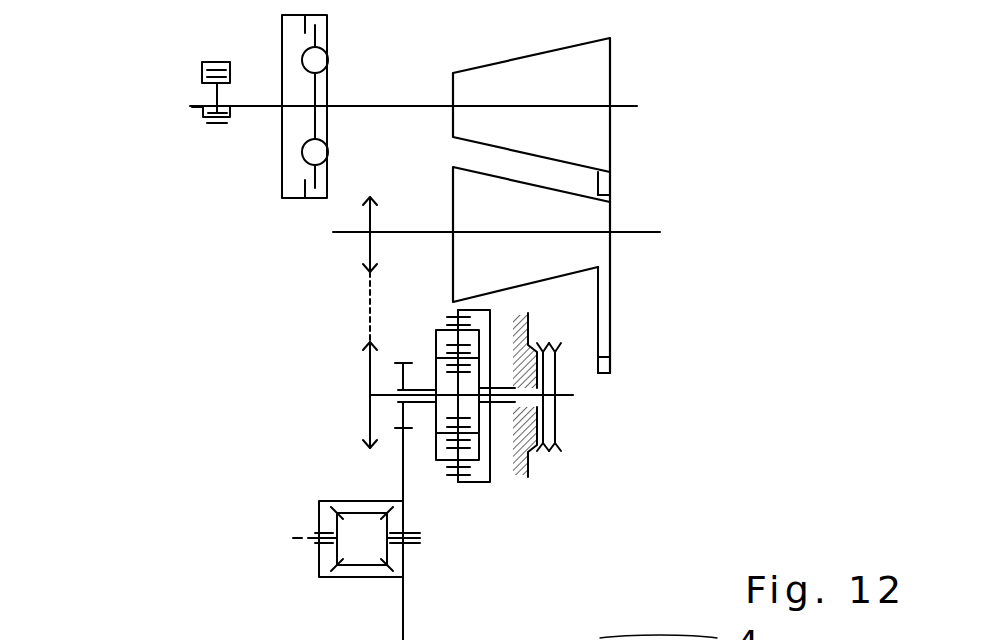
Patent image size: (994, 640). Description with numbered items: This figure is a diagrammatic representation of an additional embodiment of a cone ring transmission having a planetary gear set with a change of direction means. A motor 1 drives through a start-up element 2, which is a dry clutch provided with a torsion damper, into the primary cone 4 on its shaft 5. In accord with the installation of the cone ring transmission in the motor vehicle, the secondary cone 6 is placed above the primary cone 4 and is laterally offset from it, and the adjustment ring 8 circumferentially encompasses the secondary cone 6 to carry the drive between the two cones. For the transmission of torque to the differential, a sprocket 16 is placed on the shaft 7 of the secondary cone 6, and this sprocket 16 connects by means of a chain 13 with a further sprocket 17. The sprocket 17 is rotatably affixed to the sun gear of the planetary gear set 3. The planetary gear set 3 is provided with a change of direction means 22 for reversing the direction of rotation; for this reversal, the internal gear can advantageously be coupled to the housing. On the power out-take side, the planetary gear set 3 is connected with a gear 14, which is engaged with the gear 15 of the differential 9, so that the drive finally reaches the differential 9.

The motor 1 is at (202, 65).
The start-up element 2 is at (282, 20).
The planetary gear set 3 is at (436, 343).
The primary cone 4 is at (563, 45).
The shaft 5 is at (625, 108).
The secondary cone 6 is at (557, 283).
The shaft 7 is at (627, 231).
The adjustment ring 8 is at (612, 360).
The differential 9 is at (357, 577).
The chain 13 is at (370, 310).
The gear 14 is at (403, 418).
The gear 15 is at (404, 608).
The sprocket for chain 16 is at (370, 252).
The sprocket for chain 17 is at (370, 368).
The arrangement for reversal of rotational direction 22 is at (552, 408).